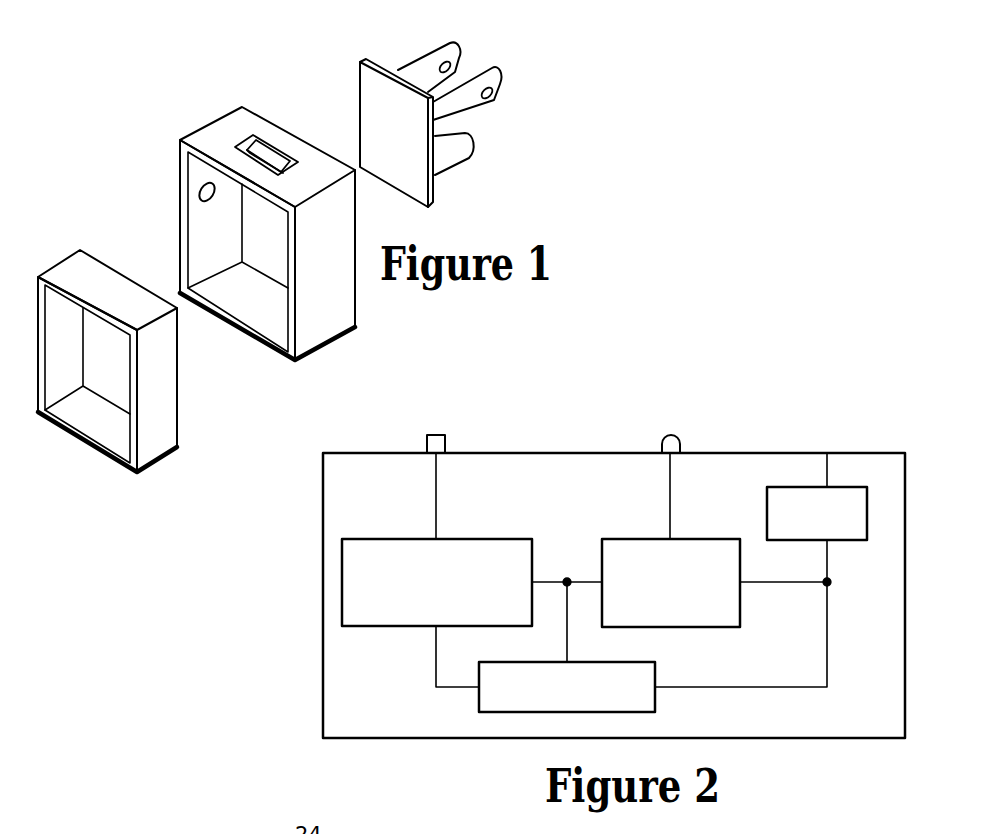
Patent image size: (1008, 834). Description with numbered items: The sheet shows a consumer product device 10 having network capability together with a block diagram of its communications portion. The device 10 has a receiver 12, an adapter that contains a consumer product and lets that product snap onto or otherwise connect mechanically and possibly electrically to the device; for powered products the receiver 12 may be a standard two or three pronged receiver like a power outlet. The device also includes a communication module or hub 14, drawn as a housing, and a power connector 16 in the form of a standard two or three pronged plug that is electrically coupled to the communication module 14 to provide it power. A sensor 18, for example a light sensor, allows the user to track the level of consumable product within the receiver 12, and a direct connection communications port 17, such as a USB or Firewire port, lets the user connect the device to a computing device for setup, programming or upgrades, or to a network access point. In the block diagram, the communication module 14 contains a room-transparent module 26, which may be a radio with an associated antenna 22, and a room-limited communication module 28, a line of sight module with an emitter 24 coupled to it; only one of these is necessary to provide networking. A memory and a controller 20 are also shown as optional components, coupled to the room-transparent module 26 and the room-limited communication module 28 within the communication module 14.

In FIG. 1, the consumer product device 10 is at (152, 84).
In FIG. 1, the receiver 12 is at (57, 256).
In FIG. 1, the communication module 14 is at (212, 122).
In FIG. 2, the communication module 14 is at (872, 453).
In FIG. 1, the power connector 16 is at (420, 59).
In FIG. 1, the port 17 is at (273, 144).
In FIG. 1, the sensor 18 is at (200, 196).
In FIG. 2, the controller 20 is at (636, 662).
In FIG. 2, the antenna 22 is at (435, 435).
In FIG. 2, the emitter 24 is at (670, 435).
In FIG. 2, the room-transparent module 26 is at (393, 539).
In FIG. 2, the room-limited communication module 28 is at (630, 539).